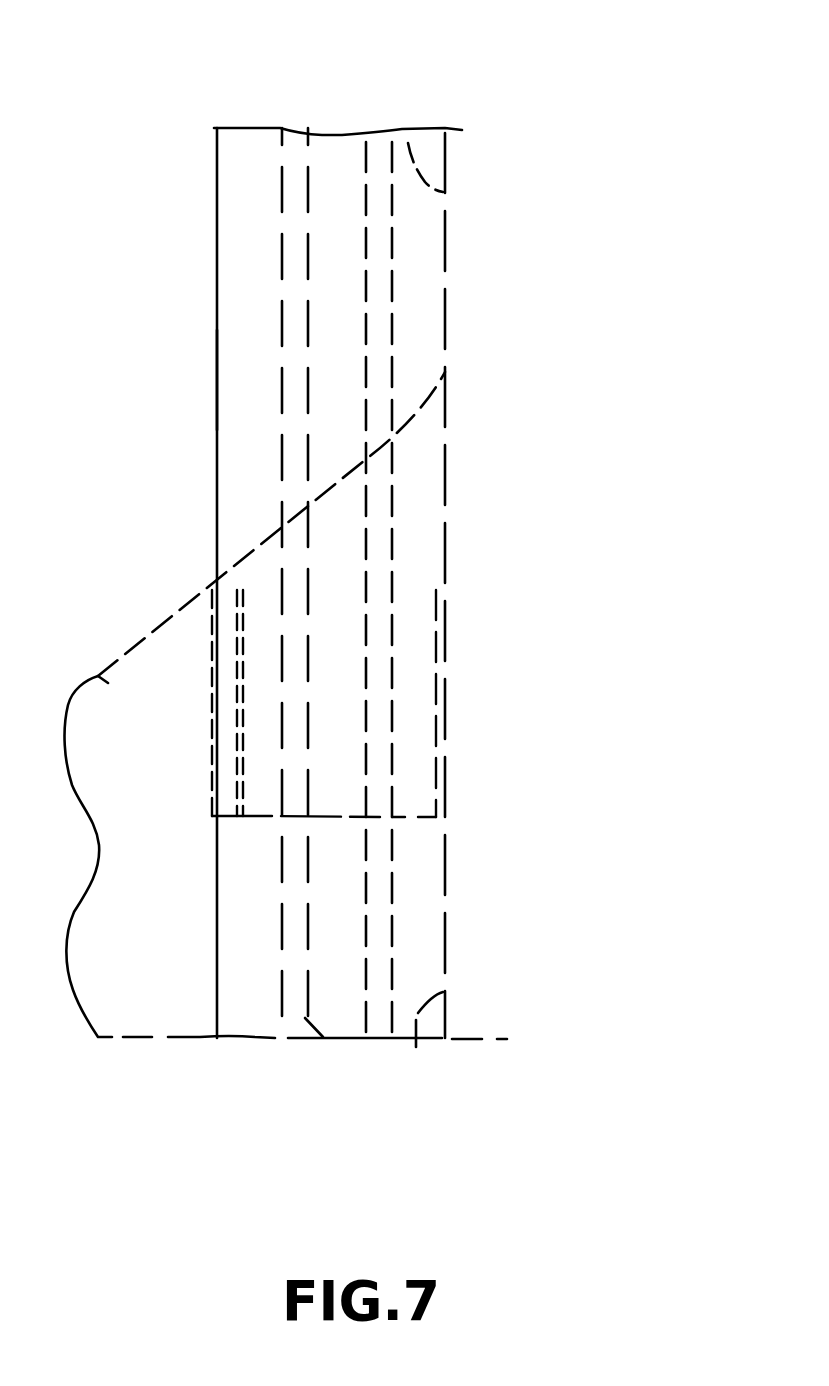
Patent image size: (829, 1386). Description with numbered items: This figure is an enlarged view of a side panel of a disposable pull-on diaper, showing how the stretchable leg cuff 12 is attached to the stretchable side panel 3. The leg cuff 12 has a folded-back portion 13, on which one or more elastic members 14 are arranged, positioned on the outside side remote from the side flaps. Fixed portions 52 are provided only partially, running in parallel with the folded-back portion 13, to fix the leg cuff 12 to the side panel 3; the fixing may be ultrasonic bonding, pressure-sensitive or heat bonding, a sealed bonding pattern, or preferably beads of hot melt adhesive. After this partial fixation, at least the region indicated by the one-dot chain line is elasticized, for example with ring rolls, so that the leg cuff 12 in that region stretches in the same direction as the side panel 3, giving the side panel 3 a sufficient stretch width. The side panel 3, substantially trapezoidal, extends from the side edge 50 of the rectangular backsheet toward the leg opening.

The stretchable leg cuff 12 is at (240, 208).
The folded-back portion 13 is at (213, 378).
The stretchable side panel 3 is at (100, 672).
The fixed portion 52 is at (227, 722).
The side edge 50 is at (410, 130).
The elastic member 14 is at (327, 1044).